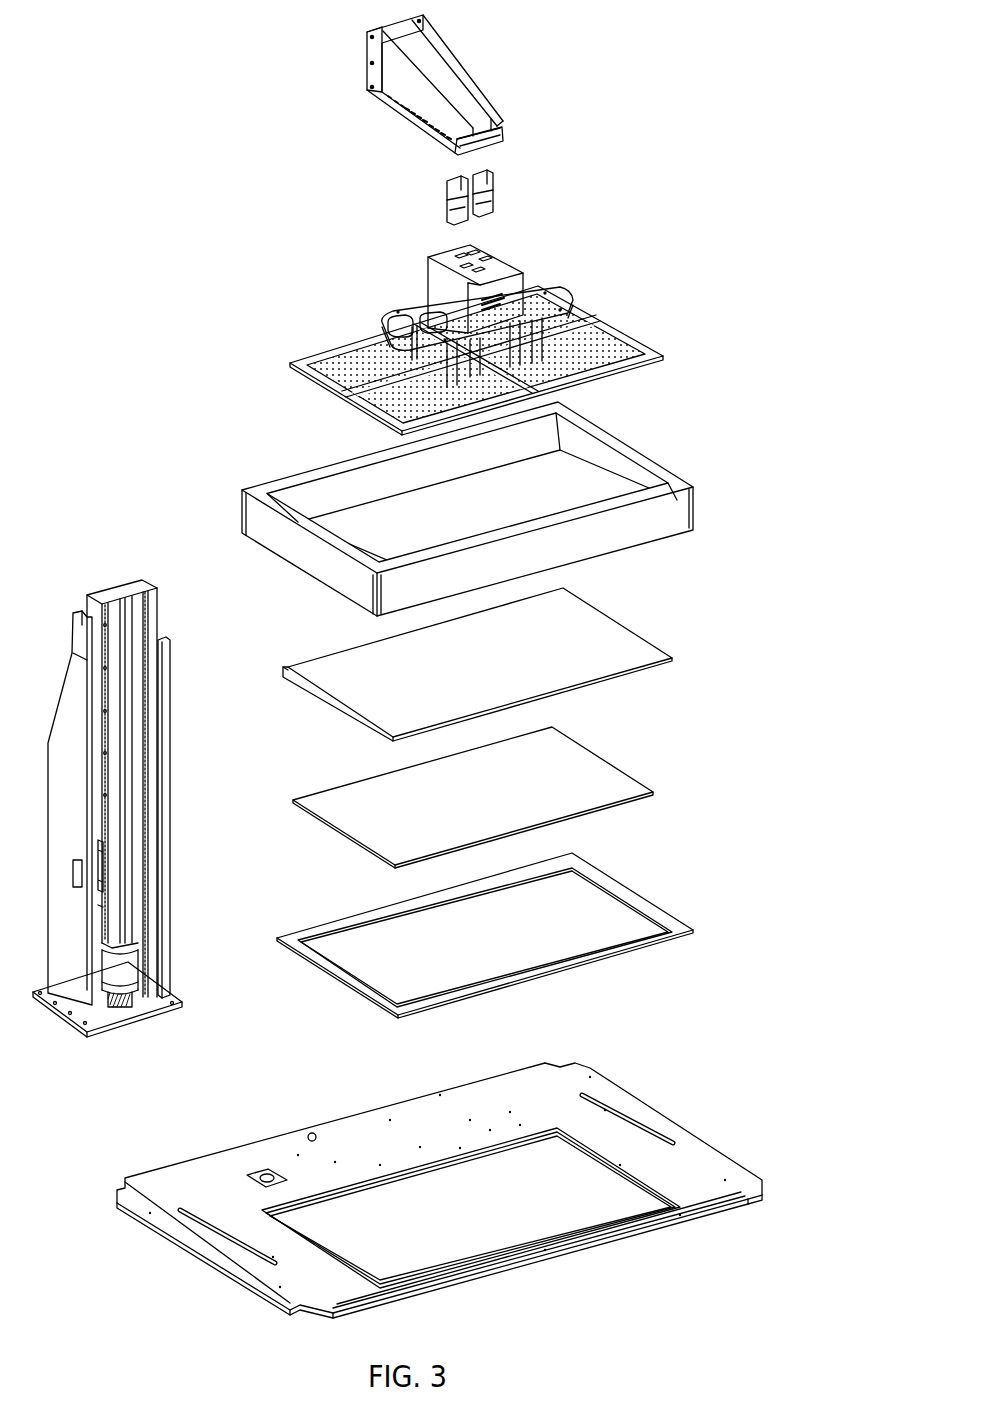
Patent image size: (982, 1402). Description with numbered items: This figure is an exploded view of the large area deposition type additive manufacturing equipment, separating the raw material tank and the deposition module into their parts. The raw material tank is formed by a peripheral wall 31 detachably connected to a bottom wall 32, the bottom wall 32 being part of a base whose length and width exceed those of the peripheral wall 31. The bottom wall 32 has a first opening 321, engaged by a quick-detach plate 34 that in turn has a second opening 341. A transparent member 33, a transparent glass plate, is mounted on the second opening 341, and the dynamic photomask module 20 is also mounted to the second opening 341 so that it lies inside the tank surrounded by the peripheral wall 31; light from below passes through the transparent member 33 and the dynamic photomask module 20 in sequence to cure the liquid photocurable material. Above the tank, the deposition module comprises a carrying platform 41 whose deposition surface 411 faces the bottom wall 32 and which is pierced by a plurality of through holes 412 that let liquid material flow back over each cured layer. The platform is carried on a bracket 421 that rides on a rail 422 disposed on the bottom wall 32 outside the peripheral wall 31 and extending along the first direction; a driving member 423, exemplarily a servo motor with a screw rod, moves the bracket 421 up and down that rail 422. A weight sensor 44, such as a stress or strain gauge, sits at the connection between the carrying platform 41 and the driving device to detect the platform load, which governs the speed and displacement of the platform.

The dynamic photomask module 20 is at (600, 633).
The peripheral wall 31 is at (627, 442).
The bottom wall 32 is at (439, 1190).
The first opening 321 is at (327, 1252).
The transparent member 33 is at (568, 770).
The quick-detach plate 34 is at (490, 930).
The second opening 341 is at (348, 973).
The carrying platform 41 is at (483, 342).
The deposition surface 411 is at (613, 353).
The through holes 412 is at (357, 363).
The bracket 421 is at (472, 82).
The rail 422 is at (130, 820).
The driving member 423 is at (133, 980).
The weight sensor 44 is at (488, 215).